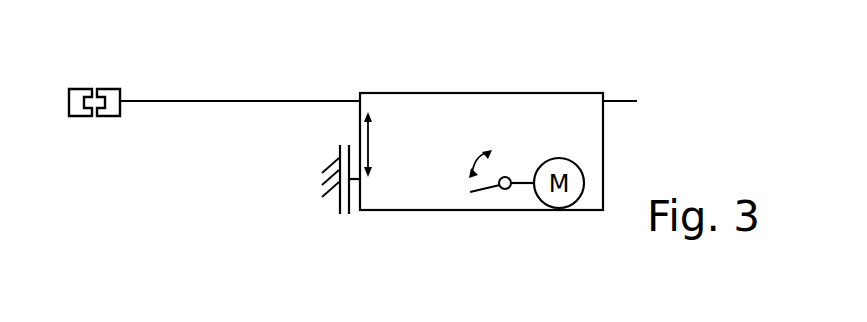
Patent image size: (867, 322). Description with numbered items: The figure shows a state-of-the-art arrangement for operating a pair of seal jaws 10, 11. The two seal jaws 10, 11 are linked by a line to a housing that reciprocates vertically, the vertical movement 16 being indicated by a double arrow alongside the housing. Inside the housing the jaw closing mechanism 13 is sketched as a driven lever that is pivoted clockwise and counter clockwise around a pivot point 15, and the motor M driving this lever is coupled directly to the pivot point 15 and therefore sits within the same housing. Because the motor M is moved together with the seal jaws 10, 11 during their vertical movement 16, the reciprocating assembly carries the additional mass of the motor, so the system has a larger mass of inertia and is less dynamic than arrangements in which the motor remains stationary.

The seal jaw 10 is at (83, 89).
The seal jaw 11 is at (112, 89).
The jaw closing mechanism 13 is at (483, 203).
The pivot point 15 is at (513, 189).
The vertical movement 16 is at (368, 128).